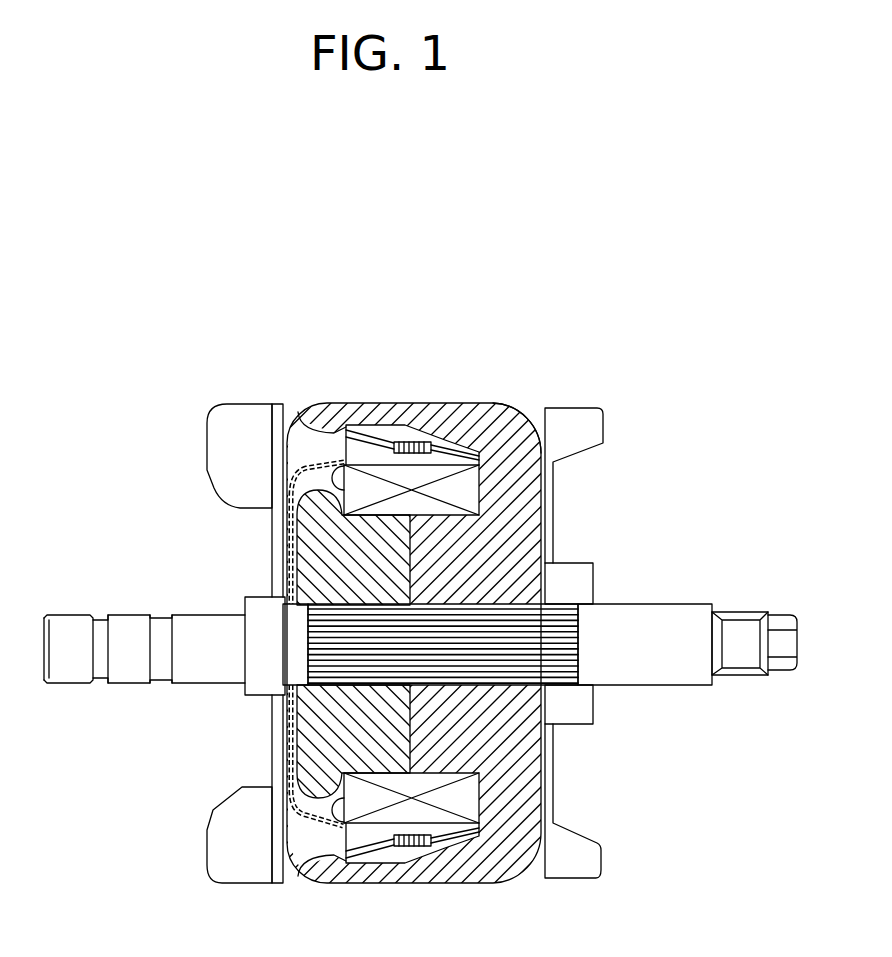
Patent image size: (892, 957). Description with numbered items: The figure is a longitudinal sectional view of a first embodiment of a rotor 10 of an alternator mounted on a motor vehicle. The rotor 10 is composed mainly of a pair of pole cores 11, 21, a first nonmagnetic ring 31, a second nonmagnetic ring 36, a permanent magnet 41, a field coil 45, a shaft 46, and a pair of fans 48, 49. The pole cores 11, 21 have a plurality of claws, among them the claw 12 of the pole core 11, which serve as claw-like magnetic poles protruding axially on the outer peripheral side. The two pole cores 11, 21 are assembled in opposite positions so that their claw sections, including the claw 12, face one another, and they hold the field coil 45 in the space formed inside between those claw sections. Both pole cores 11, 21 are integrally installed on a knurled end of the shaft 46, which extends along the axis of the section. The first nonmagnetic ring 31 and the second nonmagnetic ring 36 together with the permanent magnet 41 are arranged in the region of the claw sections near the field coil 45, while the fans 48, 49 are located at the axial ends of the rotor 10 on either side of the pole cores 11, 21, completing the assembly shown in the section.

The rotor 10 is at (558, 314).
The pole core 11 is at (520, 556).
The claw 12 is at (510, 416).
The pole core 21 is at (332, 553).
The first nonmagnetic ring 31 is at (387, 424).
The second nonmagnetic ring 36 is at (420, 437).
The permanent magnet 41 is at (300, 417).
The field coil 45 is at (467, 487).
The shaft 46 is at (637, 668).
The fan 48 is at (585, 860).
The fan 49 is at (223, 826).